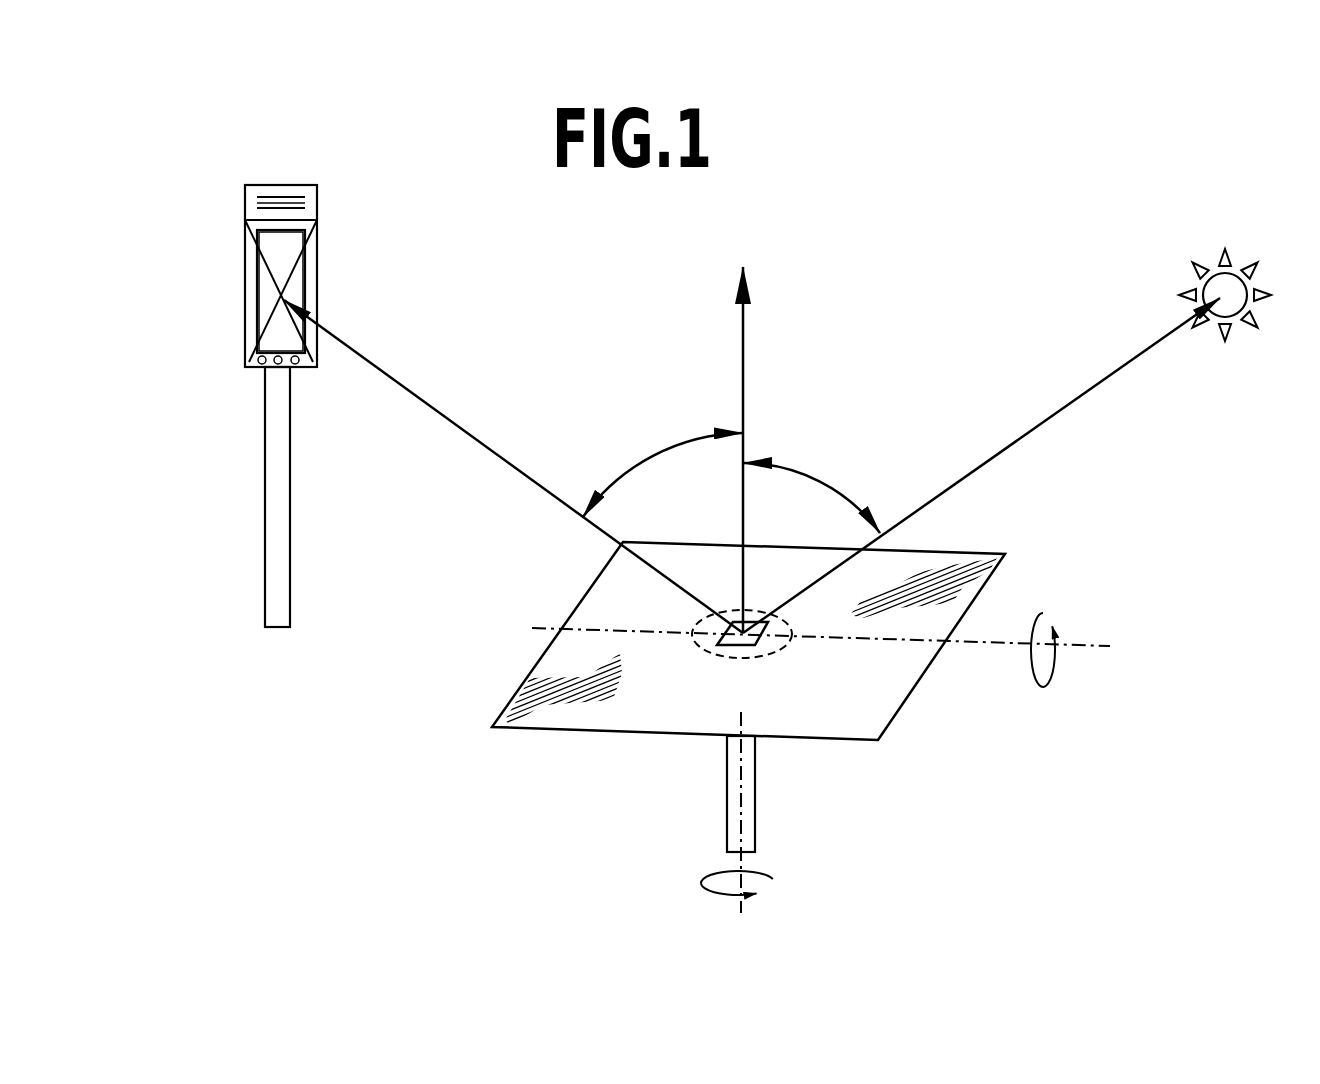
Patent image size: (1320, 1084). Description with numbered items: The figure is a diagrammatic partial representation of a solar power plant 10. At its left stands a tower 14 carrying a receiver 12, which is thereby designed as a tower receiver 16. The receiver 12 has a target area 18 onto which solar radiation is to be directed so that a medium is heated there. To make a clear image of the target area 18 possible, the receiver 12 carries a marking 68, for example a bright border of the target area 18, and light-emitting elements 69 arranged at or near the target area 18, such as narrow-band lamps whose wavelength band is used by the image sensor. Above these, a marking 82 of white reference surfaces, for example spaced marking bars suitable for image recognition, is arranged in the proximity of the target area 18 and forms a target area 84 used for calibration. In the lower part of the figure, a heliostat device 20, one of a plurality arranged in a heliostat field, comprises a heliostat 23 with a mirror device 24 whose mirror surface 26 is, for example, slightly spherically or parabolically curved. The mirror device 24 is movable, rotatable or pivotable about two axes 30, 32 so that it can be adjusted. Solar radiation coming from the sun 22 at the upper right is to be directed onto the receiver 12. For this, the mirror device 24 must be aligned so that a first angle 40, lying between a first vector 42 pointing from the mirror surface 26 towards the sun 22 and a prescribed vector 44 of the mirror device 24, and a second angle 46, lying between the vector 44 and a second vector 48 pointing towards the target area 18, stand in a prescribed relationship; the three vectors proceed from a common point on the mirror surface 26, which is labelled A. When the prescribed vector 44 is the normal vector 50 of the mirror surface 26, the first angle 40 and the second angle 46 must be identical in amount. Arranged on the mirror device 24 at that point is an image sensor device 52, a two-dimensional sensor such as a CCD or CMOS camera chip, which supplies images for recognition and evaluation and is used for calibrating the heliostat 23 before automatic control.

The solar power plant 10 is at (897, 284).
The receiver 12 is at (317, 256).
The tower 14 is at (288, 500).
The tower receiver 16 is at (247, 371).
The target area 18 is at (262, 292).
The heliostat device 20 is at (671, 762).
The sun 22 is at (1213, 280).
The heliostat 23 is at (898, 752).
The mirror device 24 is at (582, 677).
The mirror surface 26 is at (970, 554).
The first axis 30 is at (748, 798).
The second axis 32 is at (1078, 648).
The first angle 40 is at (830, 485).
The first vector 42 is at (1040, 423).
The prescribed vector 44 is at (743, 372).
The second angle 46 is at (652, 453).
The second vector 48 is at (458, 423).
The normal vector 50 is at (743, 355).
The image sensor device 52 is at (715, 641).
The marking 68 is at (274, 228).
The light-emitting element 69 is at (300, 365).
The marking 82 is at (247, 228).
The target area 84 is at (305, 206).
The measurement point A is at (776, 652).